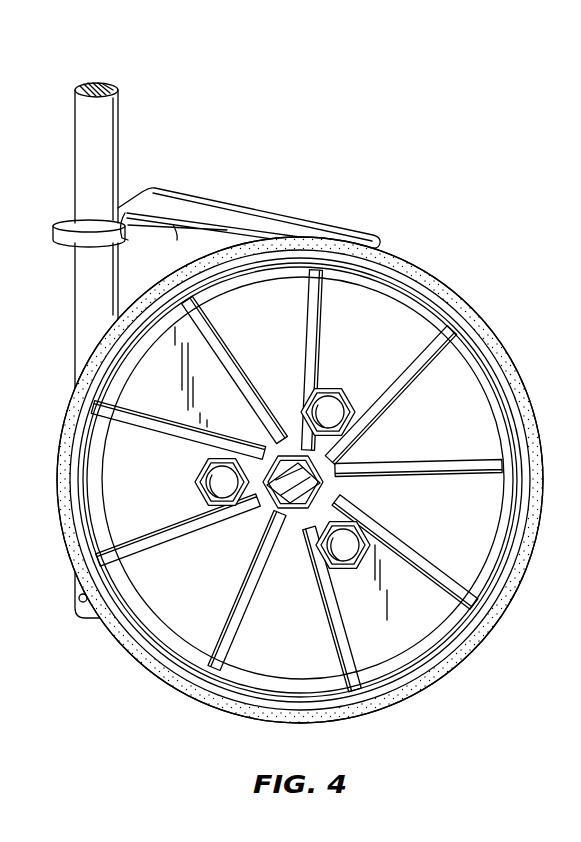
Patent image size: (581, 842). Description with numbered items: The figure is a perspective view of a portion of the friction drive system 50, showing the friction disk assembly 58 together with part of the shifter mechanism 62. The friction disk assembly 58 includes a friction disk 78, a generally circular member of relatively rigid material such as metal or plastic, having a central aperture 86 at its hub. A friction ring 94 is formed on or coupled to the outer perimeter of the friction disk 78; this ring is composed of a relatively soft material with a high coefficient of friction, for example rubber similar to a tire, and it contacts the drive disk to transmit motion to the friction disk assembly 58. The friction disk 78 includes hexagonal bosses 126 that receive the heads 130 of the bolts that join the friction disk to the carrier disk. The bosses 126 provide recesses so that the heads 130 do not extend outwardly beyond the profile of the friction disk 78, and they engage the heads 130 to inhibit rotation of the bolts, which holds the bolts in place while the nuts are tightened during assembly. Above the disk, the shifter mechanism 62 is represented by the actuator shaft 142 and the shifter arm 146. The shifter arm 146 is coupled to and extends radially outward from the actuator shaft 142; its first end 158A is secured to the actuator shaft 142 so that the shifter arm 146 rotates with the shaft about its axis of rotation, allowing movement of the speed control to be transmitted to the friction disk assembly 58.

The friction drive system 50 is at (444, 151).
The friction disk assembly 58 is at (316, 477).
The shifter mechanism 62 is at (249, 187).
The friction disk 78 is at (160, 625).
The central aperture 86 is at (278, 507).
The friction ring 94 is at (503, 376).
The hexagonal bosses 126 is at (327, 382).
The heads 130 is at (332, 414).
The actuator shaft 142 is at (105, 127).
The shifter arm 146 is at (266, 197).
The first end 158A is at (67, 226).